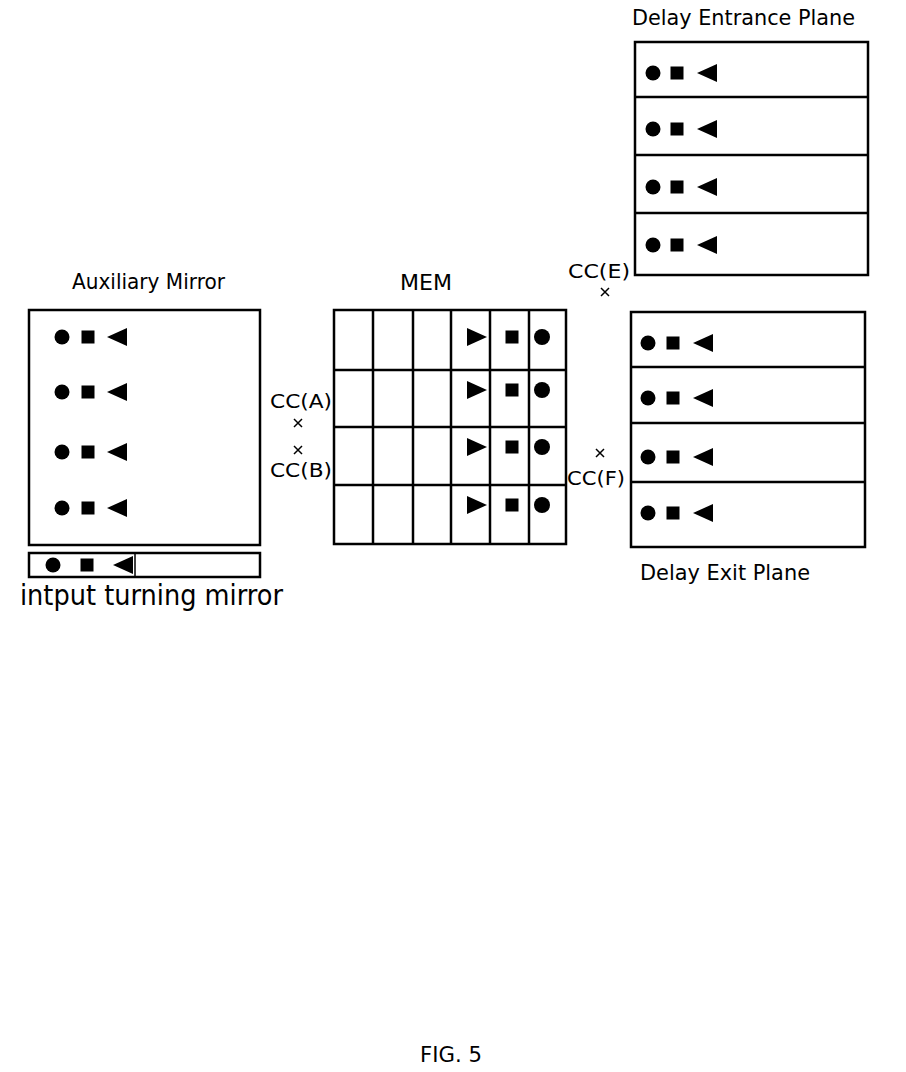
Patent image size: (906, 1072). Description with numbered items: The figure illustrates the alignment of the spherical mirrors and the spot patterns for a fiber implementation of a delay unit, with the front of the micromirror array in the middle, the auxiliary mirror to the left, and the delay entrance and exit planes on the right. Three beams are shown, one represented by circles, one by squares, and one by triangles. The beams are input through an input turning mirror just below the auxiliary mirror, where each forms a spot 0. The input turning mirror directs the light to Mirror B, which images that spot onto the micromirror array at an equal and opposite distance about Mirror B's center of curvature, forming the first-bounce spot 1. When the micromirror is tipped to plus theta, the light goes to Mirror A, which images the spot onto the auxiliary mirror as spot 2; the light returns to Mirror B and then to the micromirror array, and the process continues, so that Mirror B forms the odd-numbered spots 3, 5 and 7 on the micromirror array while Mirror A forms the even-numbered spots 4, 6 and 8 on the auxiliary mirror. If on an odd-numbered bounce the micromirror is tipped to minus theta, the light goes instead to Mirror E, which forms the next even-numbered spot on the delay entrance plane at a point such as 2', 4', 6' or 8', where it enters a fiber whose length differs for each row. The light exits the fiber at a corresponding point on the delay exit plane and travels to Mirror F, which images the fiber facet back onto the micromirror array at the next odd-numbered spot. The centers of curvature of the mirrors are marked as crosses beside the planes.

The input spot 0 is at (144, 565).
The first bounce spot 1 is at (490, 338).
The second bounce spot 2 is at (105, 506).
The third bounce spot 3 is at (490, 393).
The fourth bounce spot 4 is at (105, 447).
The fifth bounce spot 5 is at (490, 451).
The sixth bounce spot 6 is at (105, 388).
The seventh bounce spot 7 is at (490, 508).
The eighth bounce spot 8 is at (105, 338).
The delay entrance spot 8' is at (698, 67).
The delay entrance spot 6' is at (698, 124).
The delay entrance spot 4' is at (698, 183).
The delay entrance spot 2' is at (698, 240).